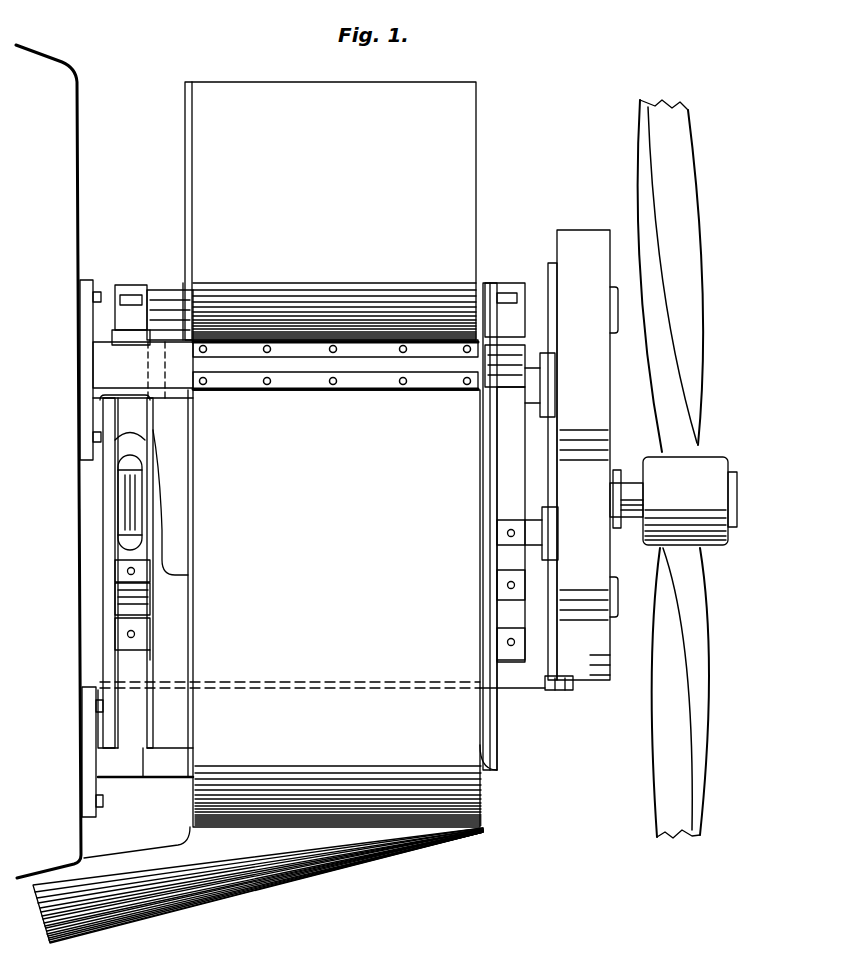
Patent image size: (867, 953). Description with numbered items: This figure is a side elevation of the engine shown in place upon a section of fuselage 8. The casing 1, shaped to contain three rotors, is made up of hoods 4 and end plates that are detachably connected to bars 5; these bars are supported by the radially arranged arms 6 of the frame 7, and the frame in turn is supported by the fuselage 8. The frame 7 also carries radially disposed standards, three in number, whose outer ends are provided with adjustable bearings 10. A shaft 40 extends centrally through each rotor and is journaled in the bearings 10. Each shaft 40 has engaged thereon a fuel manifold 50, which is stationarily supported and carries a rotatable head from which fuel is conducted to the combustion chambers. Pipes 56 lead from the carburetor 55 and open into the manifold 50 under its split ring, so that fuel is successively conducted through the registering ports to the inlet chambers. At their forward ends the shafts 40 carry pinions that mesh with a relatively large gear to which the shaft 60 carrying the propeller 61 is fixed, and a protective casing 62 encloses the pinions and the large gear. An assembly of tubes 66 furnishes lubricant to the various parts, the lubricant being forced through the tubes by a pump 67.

The casing 1 is at (485, 143).
The hood 4 is at (290, 608).
The bar 5 is at (123, 365).
The radially arranged arm 6 is at (130, 727).
The frame 7 is at (143, 780).
The fuselage 8 is at (85, 842).
The adjustable bearing 10 is at (137, 287).
The shaft 40 is at (175, 300).
The fuel manifold 50 is at (182, 268).
The carburetor 55 is at (125, 503).
The pipe 56 is at (172, 488).
The shaft 60 is at (628, 520).
The propeller 61 is at (705, 398).
The protective casing 62 is at (608, 447).
The tube 66 is at (170, 690).
The pump 67 is at (562, 692).